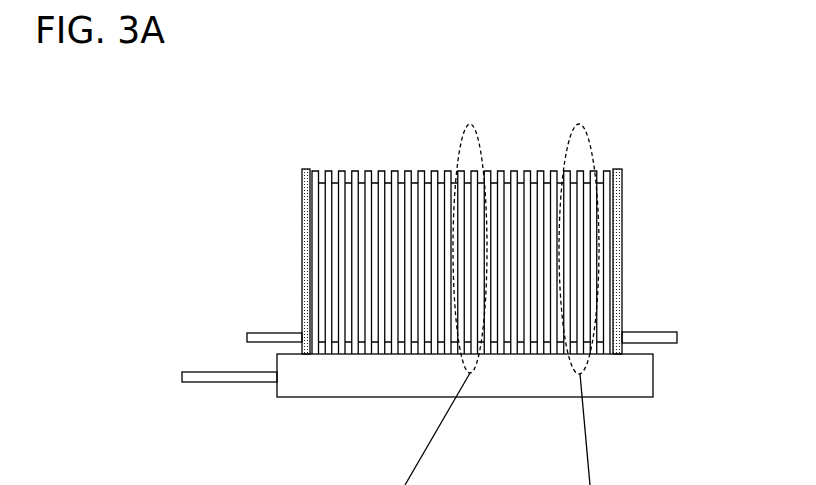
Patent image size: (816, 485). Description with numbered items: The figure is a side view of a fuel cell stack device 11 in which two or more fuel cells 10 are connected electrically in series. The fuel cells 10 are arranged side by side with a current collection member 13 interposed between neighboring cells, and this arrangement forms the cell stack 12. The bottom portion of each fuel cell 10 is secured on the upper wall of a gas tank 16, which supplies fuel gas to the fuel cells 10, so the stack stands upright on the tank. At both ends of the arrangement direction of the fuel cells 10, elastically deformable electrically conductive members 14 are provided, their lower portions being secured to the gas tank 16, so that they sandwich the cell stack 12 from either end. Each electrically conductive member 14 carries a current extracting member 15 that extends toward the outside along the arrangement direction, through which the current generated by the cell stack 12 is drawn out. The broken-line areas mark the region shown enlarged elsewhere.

The fuel cell 10 is at (518, 174).
The fuel cell stack device 11 is at (317, 66).
The cell stack 12 is at (302, 158).
The current collection member 13 is at (407, 187).
The electrically conductive member 14 is at (622, 248).
The current extracting member 15 is at (653, 337).
The gas tank 16 is at (653, 382).